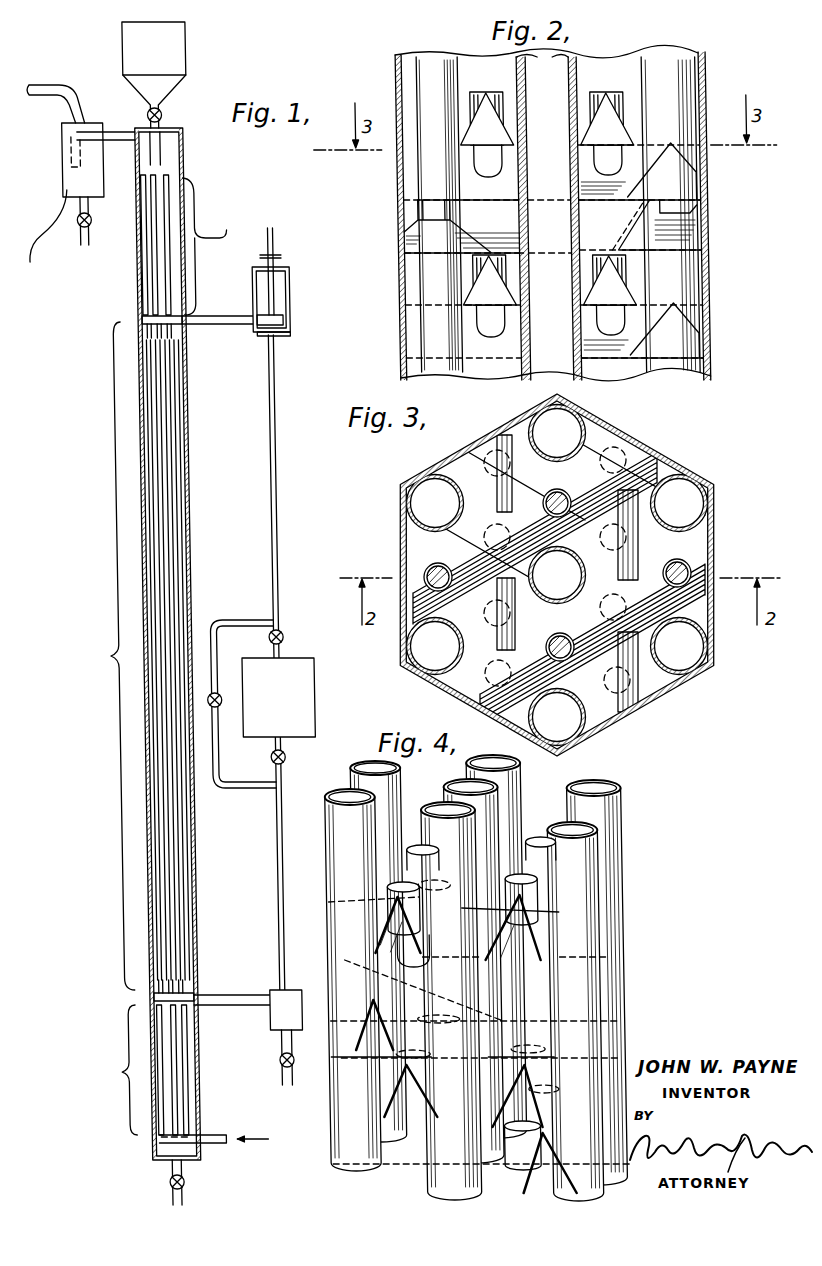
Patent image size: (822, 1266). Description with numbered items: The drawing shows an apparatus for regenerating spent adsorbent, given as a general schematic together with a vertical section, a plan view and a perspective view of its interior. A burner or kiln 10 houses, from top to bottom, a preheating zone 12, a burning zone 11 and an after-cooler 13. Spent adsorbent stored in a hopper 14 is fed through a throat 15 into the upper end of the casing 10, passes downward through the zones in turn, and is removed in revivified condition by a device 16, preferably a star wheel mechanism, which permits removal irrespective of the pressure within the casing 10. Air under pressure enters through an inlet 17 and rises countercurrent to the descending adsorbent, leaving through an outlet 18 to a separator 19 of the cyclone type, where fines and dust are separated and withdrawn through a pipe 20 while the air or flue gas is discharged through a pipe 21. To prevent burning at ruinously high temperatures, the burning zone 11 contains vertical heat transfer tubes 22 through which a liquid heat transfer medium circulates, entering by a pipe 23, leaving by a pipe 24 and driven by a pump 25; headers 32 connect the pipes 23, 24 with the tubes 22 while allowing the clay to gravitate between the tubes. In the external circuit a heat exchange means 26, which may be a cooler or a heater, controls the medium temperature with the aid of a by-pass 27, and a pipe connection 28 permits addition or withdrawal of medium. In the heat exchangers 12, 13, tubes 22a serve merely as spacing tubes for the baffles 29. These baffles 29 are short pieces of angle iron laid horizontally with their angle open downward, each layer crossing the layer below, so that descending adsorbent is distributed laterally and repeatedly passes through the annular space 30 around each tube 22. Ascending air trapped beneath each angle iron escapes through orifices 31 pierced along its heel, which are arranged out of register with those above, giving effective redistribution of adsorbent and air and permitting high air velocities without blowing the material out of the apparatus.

In FIG. 1, the burner or kiln 10 is at (141, 559).
In FIG. 2, the burner or kiln 10 is at (706, 76).
In FIG. 3, the burner or kiln 10 is at (708, 671).
In FIG. 1, the burning zone 11 is at (75, 656).
In FIG. 1, the preheating zone 12 is at (243, 242).
In FIG. 1, the after-cooler 13 is at (78, 1070).
In FIG. 1, the hopper 14 is at (196, 40).
In FIG. 1, the throat 15 is at (173, 117).
In FIG. 1, the removal device 16 is at (157, 1180).
In FIG. 1, the air inlet 17 is at (203, 1144).
In FIG. 1, the air outlet 18 is at (131, 134).
In FIG. 1, the separator 19 is at (70, 158).
In FIG. 1, the pipe 20 is at (97, 209).
In FIG. 1, the discharge pipe 21 is at (79, 68).
In FIG. 1, the heat transfer tubes 22 is at (161, 427).
In FIG. 2, the heat transfer tubes 22 is at (460, 66).
In FIG. 3, the heat transfer tubes 22 is at (580, 428).
In FIG. 4, the heat transfer tubes 22 is at (357, 787).
In FIG. 1, the spacing tubes 22a is at (150, 291).
In FIG. 1, the inlet pipe 23 is at (218, 992).
In FIG. 1, the outlet pipe 24 is at (235, 316).
In FIG. 1, the pump 25 is at (295, 305).
In FIG. 1, the heat exchange means 26 is at (313, 660).
In FIG. 1, the by-pass 27 is at (247, 612).
In FIG. 1, the pipe connection 28 is at (269, 1058).
In FIG. 2, the baffles 29 is at (467, 190).
In FIG. 3, the baffles 29 is at (653, 450).
In FIG. 4, the baffles 29 is at (533, 940).
In FIG. 2, the annular space 30 is at (420, 57).
In FIG. 3, the annular space 30 is at (436, 473).
In FIG. 2, the orifices 31 is at (503, 95).
In FIG. 3, the orifices 31 is at (435, 568).
In FIG. 4, the orifices 31 is at (423, 847).
In FIG. 1, the headers 32 is at (181, 322).